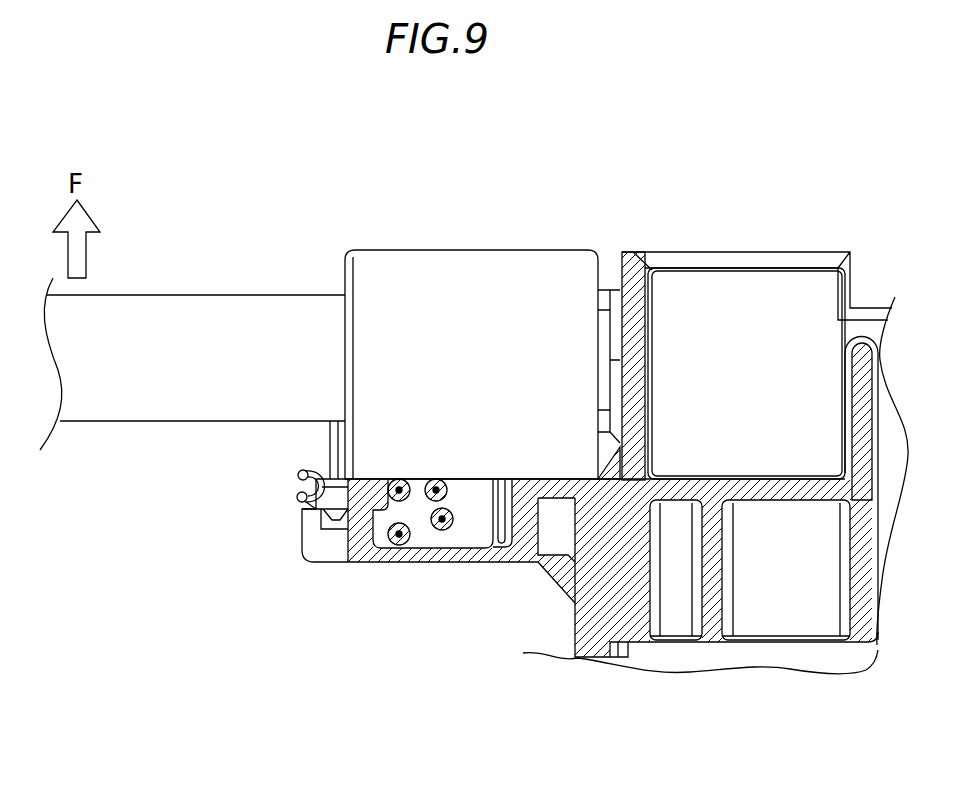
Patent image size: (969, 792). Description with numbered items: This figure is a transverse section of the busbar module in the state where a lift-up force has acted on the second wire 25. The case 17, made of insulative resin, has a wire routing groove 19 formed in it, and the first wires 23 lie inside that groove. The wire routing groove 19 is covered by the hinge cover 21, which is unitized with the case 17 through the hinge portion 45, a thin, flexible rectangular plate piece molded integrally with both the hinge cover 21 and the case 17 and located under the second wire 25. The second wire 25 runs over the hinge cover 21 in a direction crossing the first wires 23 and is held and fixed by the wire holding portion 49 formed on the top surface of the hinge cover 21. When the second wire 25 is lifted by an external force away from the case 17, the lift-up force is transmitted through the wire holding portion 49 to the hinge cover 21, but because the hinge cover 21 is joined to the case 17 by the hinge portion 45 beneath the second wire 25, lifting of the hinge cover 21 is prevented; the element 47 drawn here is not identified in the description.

The case 17 is at (853, 651).
The wire routing groove 19 is at (453, 537).
The hinge cover 21 is at (328, 452).
The first wires 23 is at (435, 480).
The second wire 25 is at (173, 292).
The hinge portion 45 is at (298, 491).
The bracket 47 is at (346, 545).
The wire holding portion 49 is at (425, 281).